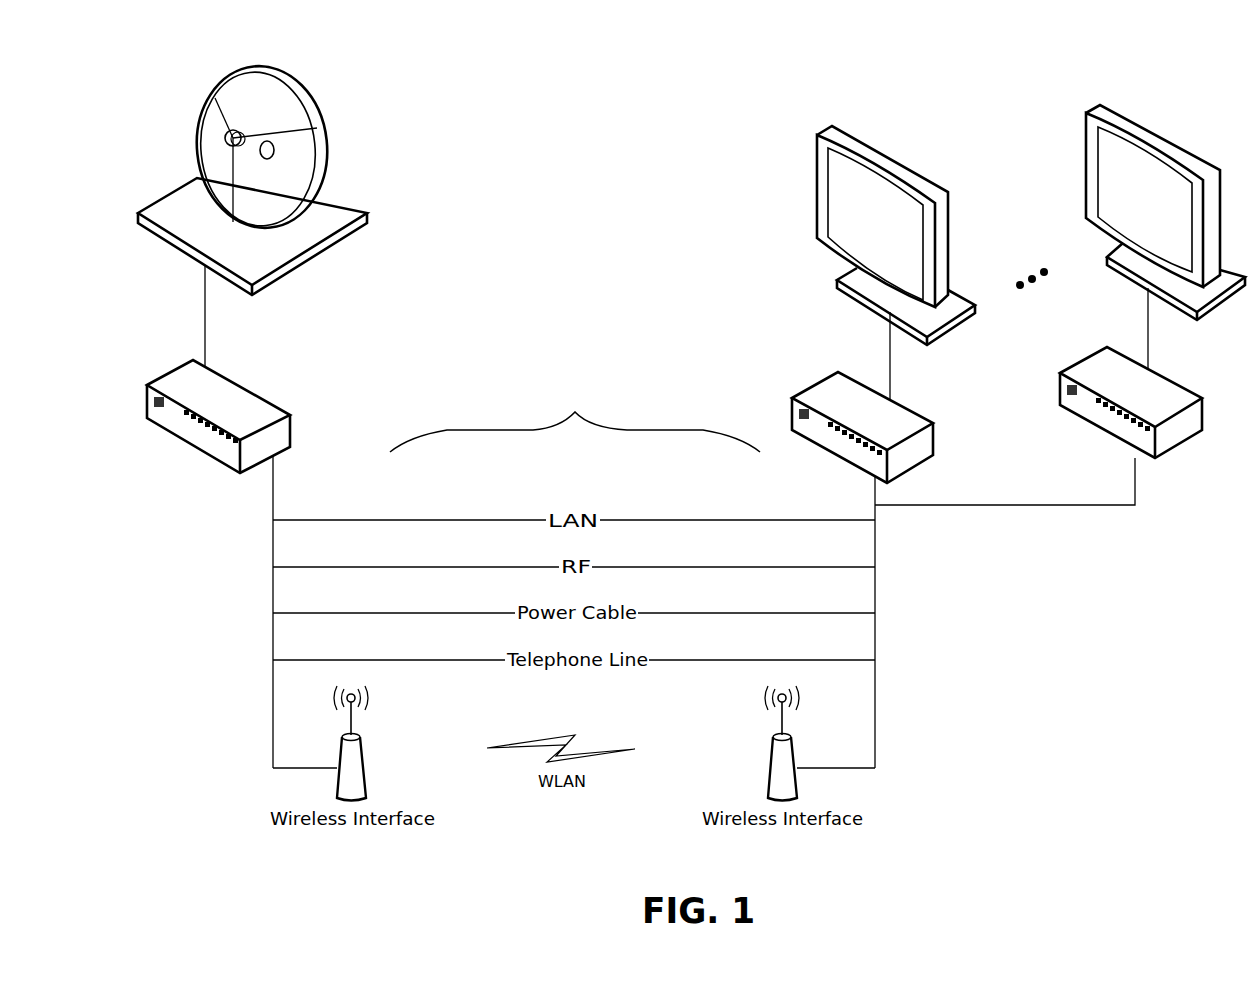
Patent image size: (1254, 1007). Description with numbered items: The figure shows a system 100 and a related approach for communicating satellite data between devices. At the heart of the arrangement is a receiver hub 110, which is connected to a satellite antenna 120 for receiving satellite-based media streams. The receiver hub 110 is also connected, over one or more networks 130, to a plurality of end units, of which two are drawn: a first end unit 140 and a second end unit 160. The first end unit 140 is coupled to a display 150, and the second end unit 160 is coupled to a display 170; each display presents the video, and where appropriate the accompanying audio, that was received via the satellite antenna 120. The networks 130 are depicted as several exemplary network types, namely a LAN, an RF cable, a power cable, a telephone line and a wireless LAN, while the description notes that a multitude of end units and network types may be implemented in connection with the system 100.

The system 100 is at (1162, 846).
The receiver hub 110 is at (273, 404).
The satellite antenna 120 is at (334, 196).
The networks 130 is at (575, 416).
The end unit 140 is at (915, 411).
The display 150 is at (923, 170).
The end unit 160 is at (1182, 387).
The display 170 is at (1190, 144).